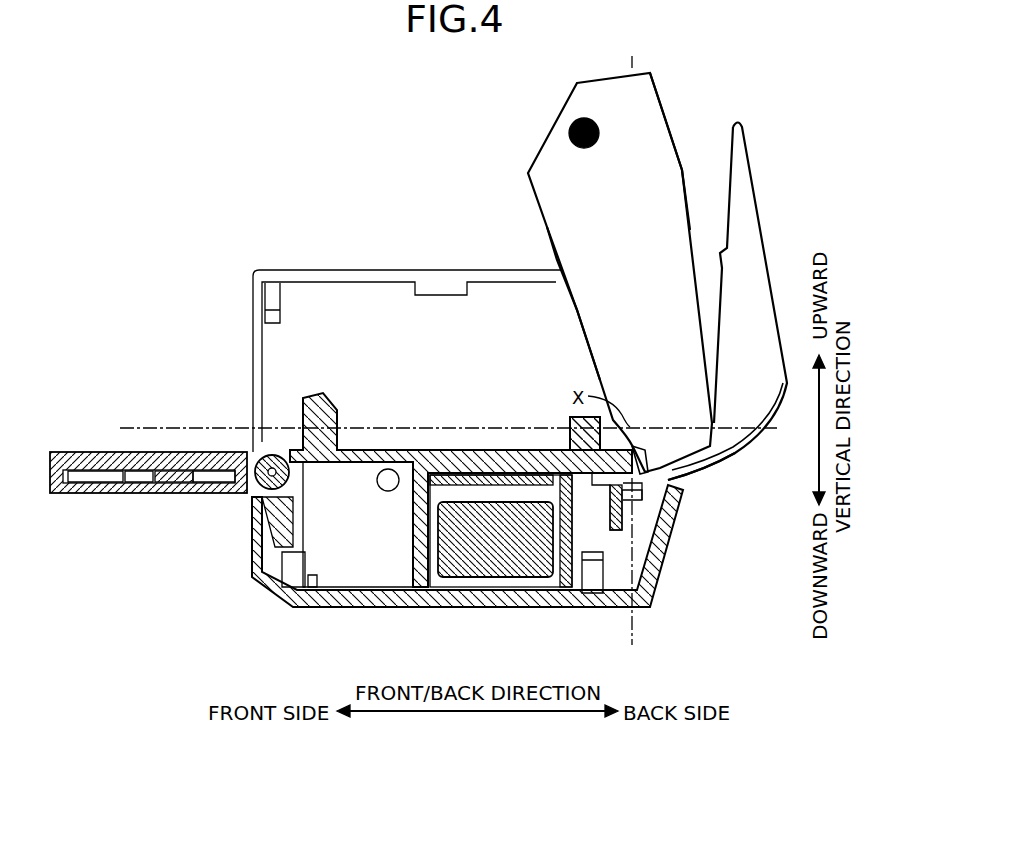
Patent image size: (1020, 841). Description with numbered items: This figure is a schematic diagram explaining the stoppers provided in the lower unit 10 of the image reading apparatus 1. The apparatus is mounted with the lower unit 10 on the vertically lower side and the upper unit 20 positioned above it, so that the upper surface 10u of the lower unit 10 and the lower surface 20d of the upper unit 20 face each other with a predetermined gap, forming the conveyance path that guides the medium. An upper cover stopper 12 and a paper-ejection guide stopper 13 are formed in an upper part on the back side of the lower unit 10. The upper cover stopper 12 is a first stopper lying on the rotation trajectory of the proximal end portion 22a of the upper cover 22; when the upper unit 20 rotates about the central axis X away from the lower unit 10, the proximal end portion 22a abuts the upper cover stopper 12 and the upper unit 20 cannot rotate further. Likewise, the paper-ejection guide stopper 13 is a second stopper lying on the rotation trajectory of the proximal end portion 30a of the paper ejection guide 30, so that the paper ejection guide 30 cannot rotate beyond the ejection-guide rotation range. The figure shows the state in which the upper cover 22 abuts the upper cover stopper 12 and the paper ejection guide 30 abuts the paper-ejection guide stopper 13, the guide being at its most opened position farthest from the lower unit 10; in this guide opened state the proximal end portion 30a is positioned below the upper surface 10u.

The image reading apparatus 1 is at (142, 161).
The lower unit 10 is at (367, 614).
The upper surface of the lower unit 10u is at (443, 450).
The upper cover stopper 12 is at (643, 465).
The paper-ejection guide stopper 13 is at (653, 497).
The upper unit 20 is at (676, 97).
The lower surface of the upper unit 20d is at (576, 316).
The upper cover 22 is at (683, 146).
The proximal end portion of the upper cover 22a is at (645, 452).
The paper ejection guide 30 is at (757, 180).
The proximal end portion of the paper ejection guide 30a is at (672, 472).